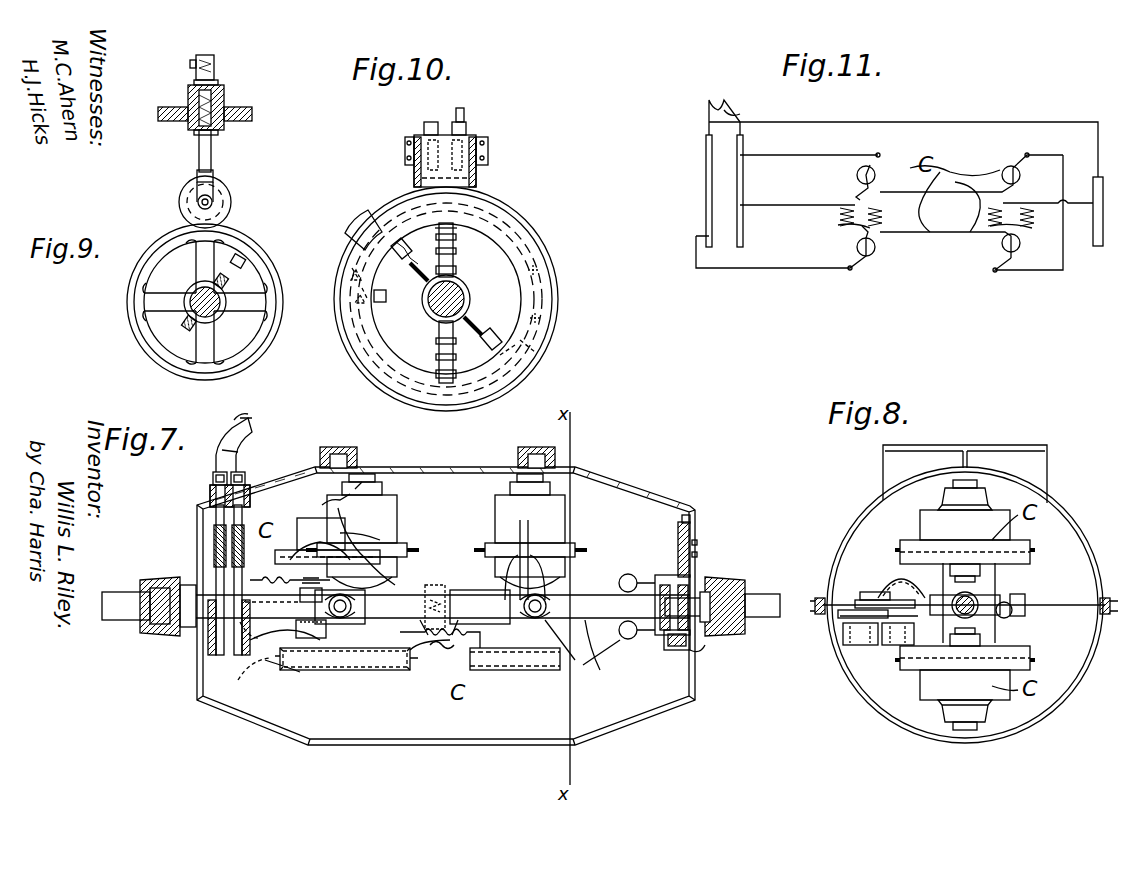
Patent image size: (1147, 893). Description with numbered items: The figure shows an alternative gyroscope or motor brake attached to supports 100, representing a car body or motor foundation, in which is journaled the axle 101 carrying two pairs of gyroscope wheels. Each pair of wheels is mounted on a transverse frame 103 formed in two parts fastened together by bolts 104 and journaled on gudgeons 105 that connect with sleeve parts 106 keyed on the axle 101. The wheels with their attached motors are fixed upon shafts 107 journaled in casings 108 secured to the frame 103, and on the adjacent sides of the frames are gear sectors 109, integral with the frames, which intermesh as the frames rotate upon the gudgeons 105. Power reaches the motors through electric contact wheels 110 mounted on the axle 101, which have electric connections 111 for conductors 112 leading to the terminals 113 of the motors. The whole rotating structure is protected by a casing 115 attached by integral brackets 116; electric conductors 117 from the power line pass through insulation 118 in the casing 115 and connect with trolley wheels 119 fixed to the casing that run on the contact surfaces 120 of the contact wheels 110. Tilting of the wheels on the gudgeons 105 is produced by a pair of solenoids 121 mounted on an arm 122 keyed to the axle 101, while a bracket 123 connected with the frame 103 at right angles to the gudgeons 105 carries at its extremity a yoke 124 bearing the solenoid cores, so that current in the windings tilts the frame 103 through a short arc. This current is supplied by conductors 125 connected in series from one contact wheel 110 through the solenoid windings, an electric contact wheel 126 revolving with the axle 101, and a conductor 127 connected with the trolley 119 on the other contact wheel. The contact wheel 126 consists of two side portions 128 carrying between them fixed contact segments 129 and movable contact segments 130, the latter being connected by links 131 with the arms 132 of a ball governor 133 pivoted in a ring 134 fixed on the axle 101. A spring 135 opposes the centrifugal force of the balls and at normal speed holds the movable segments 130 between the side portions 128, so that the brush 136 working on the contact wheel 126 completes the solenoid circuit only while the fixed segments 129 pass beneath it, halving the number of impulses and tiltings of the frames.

In FIG. 7, the supports 100 is at (145, 590).
In FIG. 9, the axle 101 is at (226, 302).
In FIG. 10, the axle 101 is at (422, 298).
In FIG. 7, the axle 101 is at (128, 632).
In FIG. 8, the axle 101 is at (950, 668).
In FIG. 7, the transverse frame 103 is at (443, 607).
In FIG. 8, the transverse frame 103 is at (1010, 594).
In FIG. 7, the bolts 104 is at (496, 656).
In FIG. 8, the bolts 104 is at (1010, 610).
In FIG. 7, the gudgeons 105 is at (352, 608).
In FIG. 8, the gudgeons 105 is at (1000, 620).
In FIG. 8, the sleeve parts 106 is at (978, 598).
In FIG. 7, the shafts 107 is at (350, 630).
In FIG. 7, the casings 108 is at (470, 676).
In FIG. 7, the gear sectors 109 is at (430, 600).
In FIG. 9, the electric contact wheels 110 is at (248, 262).
In FIG. 11, the electric contact wheels 110 is at (737, 187).
In FIG. 7, the electric contact wheels 110 is at (212, 640).
In FIG. 7, the electric connections 111 is at (250, 645).
In FIG. 11, the conductors 112 is at (835, 153).
In FIG. 7, the conductors 112 is at (520, 530).
In FIG. 7, the terminals 113 is at (340, 510).
In FIG. 9, the casing 115 is at (246, 118).
In FIG. 7, the casing 115 is at (638, 500).
In FIG. 8, the casing 115 is at (1080, 520).
In FIG. 7, the brackets 116 is at (518, 457).
In FIG. 8, the brackets 116 is at (995, 448).
In FIG. 11, the electric conductors 117 is at (727, 99).
In FIG. 7, the electric conductors 117 is at (238, 455).
In FIG. 9, the insulation 118 is at (214, 84).
In FIG. 7, the insulation 118 is at (210, 502).
In FIG. 9, the trolley wheels 119 is at (178, 196).
In FIG. 7, the trolley wheels 119 is at (244, 528).
In FIG. 7, the contact surfaces 120 is at (250, 575).
In FIG. 11, the solenoids 121 is at (842, 220).
In FIG. 7, the solenoids 121 is at (280, 670).
In FIG. 8, the solenoids 121 is at (875, 648).
In FIG. 8, the arm 122 is at (895, 578).
In FIG. 7, the bracket 123 is at (320, 539).
In FIG. 8, the bracket 123 is at (895, 585).
In FIG. 7, the yoke 124 is at (300, 606).
In FIG. 8, the yoke 124 is at (863, 597).
In FIG. 11, the conductors 125 is at (797, 193).
In FIG. 7, the conductors 125 is at (270, 690).
In FIG. 10, the electric contact wheel 126 is at (540, 335).
In FIG. 11, the electric contact wheel 126 is at (1100, 192).
In FIG. 7, the electric contact wheel 126 is at (720, 640).
In FIG. 11, the conductor 127 is at (1022, 122).
In FIG. 7, the conductor 127 is at (455, 480).
In FIG. 10, the side portions 128 is at (395, 378).
In FIG. 7, the side portions 128 is at (692, 572).
In FIG. 9, the fixed contact segments 129 is at (280, 352).
In FIG. 10, the fixed contact segments 129 is at (558, 296).
In FIG. 10, the movable contact segments 130 is at (530, 222).
In FIG. 10, the links 131 is at (445, 252).
In FIG. 7, the links 131 is at (745, 600).
In FIG. 10, the governor arms 132 is at (430, 332).
In FIG. 7, the governor arms 132 is at (668, 648).
In FIG. 7, the ball governor 133 is at (628, 574).
In FIG. 7, the ring 134 is at (695, 660).
In FIG. 7, the spring 135 is at (694, 605).
In FIG. 10, the brush 136 is at (478, 180).
In FIG. 7, the brush 136 is at (675, 548).